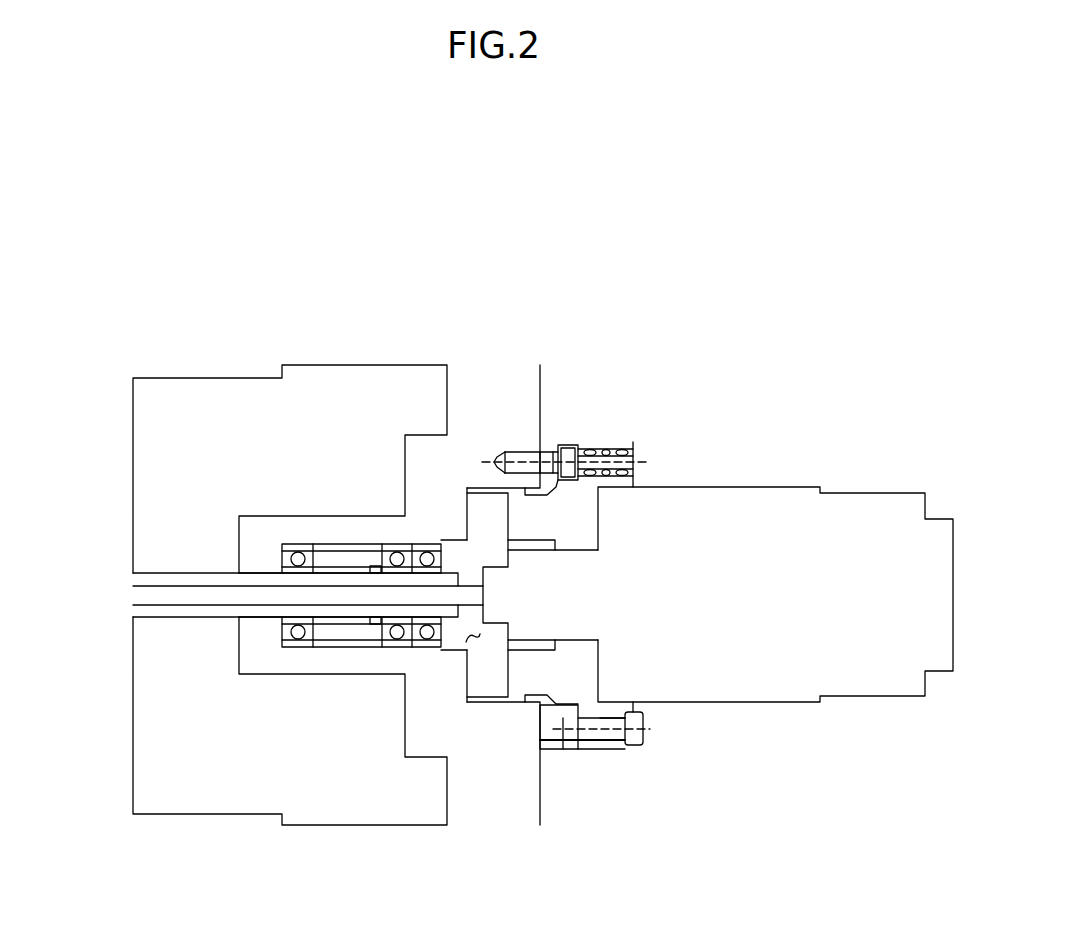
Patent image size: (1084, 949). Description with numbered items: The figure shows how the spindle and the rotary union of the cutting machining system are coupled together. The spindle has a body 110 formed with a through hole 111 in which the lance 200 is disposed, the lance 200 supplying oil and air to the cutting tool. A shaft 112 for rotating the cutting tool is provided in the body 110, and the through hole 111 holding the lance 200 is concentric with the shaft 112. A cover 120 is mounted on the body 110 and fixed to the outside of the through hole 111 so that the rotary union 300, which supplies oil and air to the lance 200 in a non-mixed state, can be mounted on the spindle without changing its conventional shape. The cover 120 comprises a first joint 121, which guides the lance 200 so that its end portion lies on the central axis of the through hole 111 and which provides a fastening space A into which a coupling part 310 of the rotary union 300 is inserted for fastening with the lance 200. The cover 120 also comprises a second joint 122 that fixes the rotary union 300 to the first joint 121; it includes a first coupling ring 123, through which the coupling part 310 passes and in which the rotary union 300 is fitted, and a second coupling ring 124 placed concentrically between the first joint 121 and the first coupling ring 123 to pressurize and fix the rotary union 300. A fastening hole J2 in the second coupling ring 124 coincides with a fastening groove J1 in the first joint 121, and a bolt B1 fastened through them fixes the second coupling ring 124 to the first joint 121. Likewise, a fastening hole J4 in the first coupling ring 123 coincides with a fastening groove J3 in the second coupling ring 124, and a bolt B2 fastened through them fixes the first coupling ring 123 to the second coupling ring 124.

The body 110 is at (353, 388).
The through hole 111 is at (182, 618).
The shaft 112 is at (272, 582).
The cover 120 is at (610, 541).
The first joint 121 is at (488, 372).
The second joint 122 is at (651, 283).
The first coupling ring 123 is at (620, 447).
The second coupling ring 124 is at (573, 443).
The lance 200 is at (203, 594).
The rotary union 300 is at (790, 497).
The coupling part 310 is at (495, 625).
The fastening groove J1 is at (512, 450).
The fastening hole J2 is at (551, 452).
The fastening groove J3 is at (563, 738).
The fastening hole J4 is at (613, 733).
The bolt B1 is at (577, 448).
The bolt B2 is at (640, 732).
The fastening space A is at (473, 638).